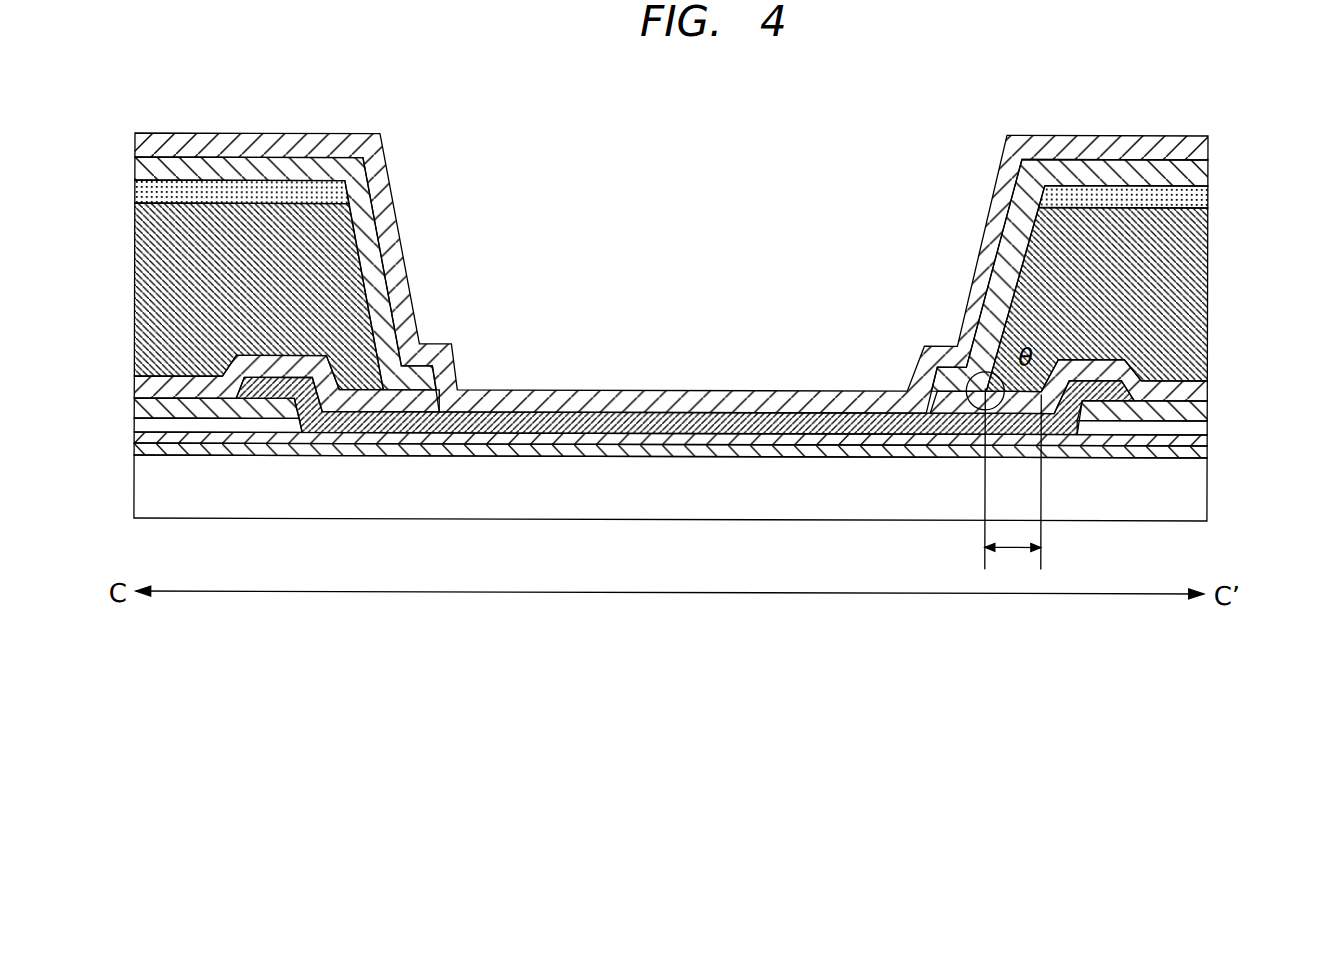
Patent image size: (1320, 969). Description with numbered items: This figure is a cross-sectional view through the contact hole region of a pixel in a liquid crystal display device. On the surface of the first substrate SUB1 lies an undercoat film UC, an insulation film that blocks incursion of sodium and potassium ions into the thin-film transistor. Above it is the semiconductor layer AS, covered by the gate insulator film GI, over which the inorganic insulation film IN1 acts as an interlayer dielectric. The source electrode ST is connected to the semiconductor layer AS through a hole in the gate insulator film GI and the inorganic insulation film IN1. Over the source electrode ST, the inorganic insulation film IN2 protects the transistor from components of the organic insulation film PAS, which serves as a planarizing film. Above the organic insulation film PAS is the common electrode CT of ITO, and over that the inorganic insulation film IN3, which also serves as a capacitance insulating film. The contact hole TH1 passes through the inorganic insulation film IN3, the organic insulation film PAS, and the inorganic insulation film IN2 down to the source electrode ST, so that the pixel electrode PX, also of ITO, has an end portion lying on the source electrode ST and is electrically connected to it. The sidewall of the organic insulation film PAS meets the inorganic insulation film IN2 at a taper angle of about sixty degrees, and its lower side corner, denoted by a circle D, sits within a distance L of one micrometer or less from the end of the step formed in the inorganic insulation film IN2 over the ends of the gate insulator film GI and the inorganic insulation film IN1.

The first substrate SUB1 is at (1198, 499).
The undercoat film UC is at (1200, 450).
The semiconductor layer AS is at (1200, 438).
The gate insulator film GI is at (1200, 426).
The inorganic insulation film IN1 is at (1209, 407).
The source electrode ST is at (1108, 386).
The inorganic insulation film IN2 is at (1110, 367).
The organic insulation film PAS is at (1200, 246).
The common electrode CT is at (1203, 192).
The inorganic insulation film IN3 is at (1203, 167).
The pixel electrode PX is at (1189, 140).
The contact hole TH1 is at (697, 288).
The circle D is at (957, 344).
The distance L is at (1013, 488).